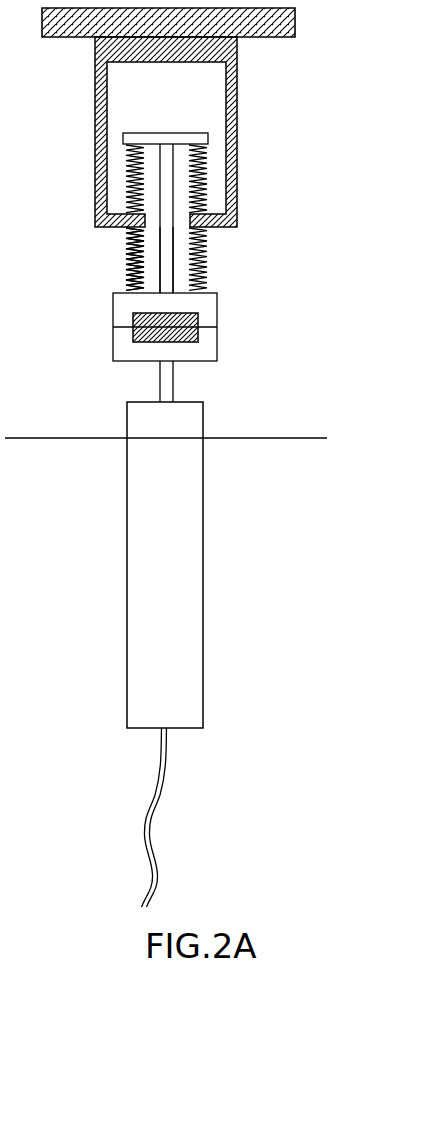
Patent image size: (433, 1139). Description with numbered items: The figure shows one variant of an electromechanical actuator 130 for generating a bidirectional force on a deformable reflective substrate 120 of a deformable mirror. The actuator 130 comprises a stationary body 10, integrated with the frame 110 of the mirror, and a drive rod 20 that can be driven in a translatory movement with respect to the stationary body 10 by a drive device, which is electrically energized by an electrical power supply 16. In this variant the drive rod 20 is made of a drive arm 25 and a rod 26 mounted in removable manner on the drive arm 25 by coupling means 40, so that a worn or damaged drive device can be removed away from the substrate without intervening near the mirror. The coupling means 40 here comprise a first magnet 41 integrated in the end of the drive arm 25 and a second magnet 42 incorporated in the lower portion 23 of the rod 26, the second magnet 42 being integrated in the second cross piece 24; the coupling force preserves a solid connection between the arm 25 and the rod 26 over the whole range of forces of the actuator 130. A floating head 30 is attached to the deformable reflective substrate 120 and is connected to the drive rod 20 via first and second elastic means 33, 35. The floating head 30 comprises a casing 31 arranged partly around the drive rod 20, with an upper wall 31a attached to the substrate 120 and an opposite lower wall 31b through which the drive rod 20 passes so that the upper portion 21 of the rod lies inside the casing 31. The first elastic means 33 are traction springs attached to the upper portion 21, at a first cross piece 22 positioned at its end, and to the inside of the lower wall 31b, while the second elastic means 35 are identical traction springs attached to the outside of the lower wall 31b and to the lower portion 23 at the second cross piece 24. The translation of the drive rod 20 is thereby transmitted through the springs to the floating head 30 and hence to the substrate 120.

The stationary body 10 is at (203, 525).
The electrical power supply 16 is at (170, 762).
The drive rod 20 is at (205, 260).
The upper portion of the drive rod 21 is at (158, 190).
The first cross piece 22 is at (152, 133).
The lower portion of the drive rod 23 is at (125, 268).
The second cross piece 24 is at (203, 310).
The drive arm 25 is at (167, 380).
The rod 26 is at (163, 252).
The floating head 30 is at (171, 132).
The casing 31 is at (238, 62).
The upper wall 31a is at (103, 47).
The lower wall 31b is at (237, 222).
The first elastic means 33 is at (185, 156).
The second elastic means 35 is at (190, 243).
The coupling means 40 is at (178, 360).
The first magnet 41 is at (145, 333).
The second magnet 42 is at (135, 322).
The frame 110 is at (292, 438).
The deformable reflective substrate 120 is at (257, 20).
The electromechanical actuator 130 is at (338, 147).